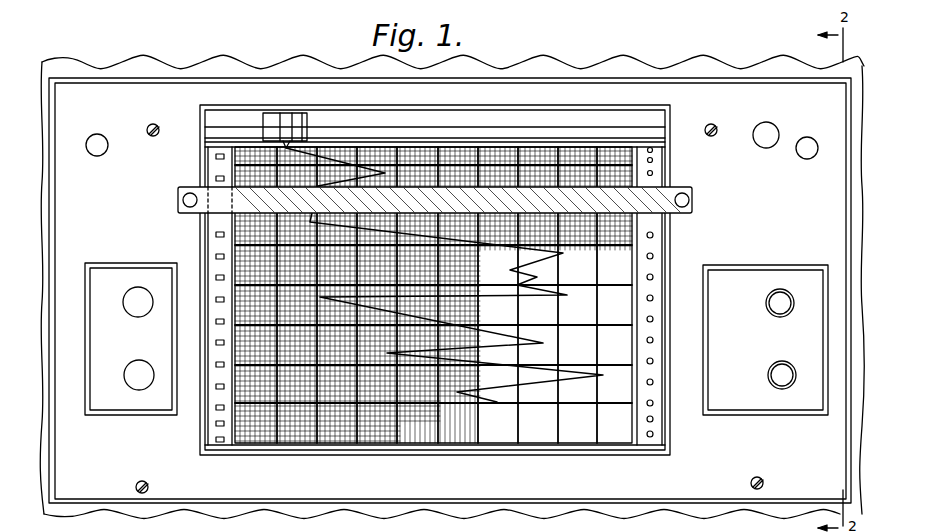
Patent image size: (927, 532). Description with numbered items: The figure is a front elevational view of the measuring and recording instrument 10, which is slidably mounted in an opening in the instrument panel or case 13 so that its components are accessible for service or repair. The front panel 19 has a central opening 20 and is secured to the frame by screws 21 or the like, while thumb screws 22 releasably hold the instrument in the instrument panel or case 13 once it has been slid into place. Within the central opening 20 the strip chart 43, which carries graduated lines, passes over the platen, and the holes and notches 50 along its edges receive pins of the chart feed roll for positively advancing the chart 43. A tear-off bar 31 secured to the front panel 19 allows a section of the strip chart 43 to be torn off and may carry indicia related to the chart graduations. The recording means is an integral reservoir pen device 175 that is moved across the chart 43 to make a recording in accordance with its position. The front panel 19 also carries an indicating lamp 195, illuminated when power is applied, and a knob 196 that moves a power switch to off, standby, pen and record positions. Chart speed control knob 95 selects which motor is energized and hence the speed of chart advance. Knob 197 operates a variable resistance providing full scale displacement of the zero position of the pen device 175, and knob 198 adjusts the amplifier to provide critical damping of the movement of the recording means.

The measuring and recording instrument 10 is at (713, 72).
The instrument panel or case 13 is at (698, 62).
The front panel 19 is at (539, 88).
The central opening 20 is at (589, 109).
The screws 21 is at (154, 123).
The thumb screws 22 is at (97, 134).
The tear-off bar 31 is at (674, 183).
The strip chart 43 is at (462, 438).
The holes and notches 50 is at (216, 278).
The chart speed control knob 95 is at (781, 386).
The integral reservoir pen device 175 is at (307, 120).
The indicating lamp 195 is at (770, 122).
The power switch knob 196 is at (781, 290).
The zero adjustment knob 197 is at (143, 290).
The damping adjustment knob 198 is at (140, 392).